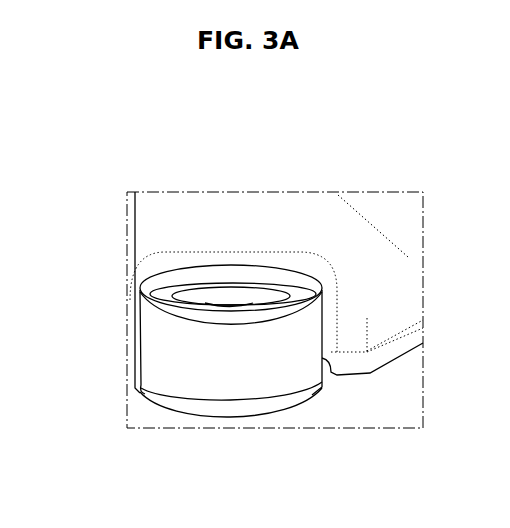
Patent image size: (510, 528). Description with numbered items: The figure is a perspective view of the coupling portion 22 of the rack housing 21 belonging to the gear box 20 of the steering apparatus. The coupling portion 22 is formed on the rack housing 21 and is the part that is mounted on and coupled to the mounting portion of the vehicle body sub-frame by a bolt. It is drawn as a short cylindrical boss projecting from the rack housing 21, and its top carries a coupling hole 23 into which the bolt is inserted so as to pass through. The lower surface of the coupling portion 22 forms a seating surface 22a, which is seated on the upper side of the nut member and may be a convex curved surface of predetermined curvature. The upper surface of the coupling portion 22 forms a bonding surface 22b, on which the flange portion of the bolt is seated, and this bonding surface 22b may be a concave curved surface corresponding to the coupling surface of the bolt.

The gear box 20 is at (373, 226).
The rack housing 21 is at (371, 312).
The coupling portion 22 is at (193, 380).
The seating surface 22a is at (247, 408).
The bonding surface 22b is at (192, 300).
The coupling hole 23 is at (232, 303).